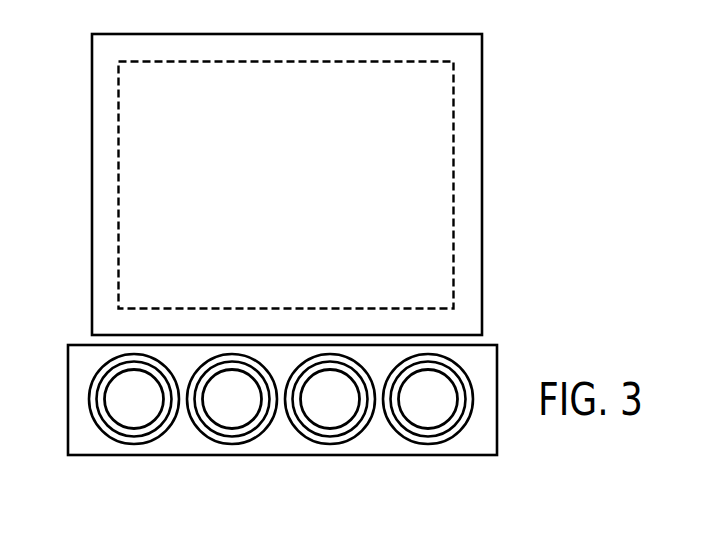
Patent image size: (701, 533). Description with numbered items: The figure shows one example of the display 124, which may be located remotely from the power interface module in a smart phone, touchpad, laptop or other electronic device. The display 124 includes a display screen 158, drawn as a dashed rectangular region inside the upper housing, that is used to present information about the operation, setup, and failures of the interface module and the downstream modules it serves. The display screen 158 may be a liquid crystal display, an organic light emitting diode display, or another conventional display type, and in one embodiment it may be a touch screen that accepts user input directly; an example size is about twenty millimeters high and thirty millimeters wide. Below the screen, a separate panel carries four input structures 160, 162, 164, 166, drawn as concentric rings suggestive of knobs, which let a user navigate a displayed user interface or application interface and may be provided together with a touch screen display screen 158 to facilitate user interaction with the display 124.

The display 124 is at (483, 53).
The display screen 158 is at (140, 122).
The input structure 160 is at (134, 444).
The input structure 162 is at (232, 444).
The input structure 164 is at (329, 444).
The input structure 166 is at (427, 444).